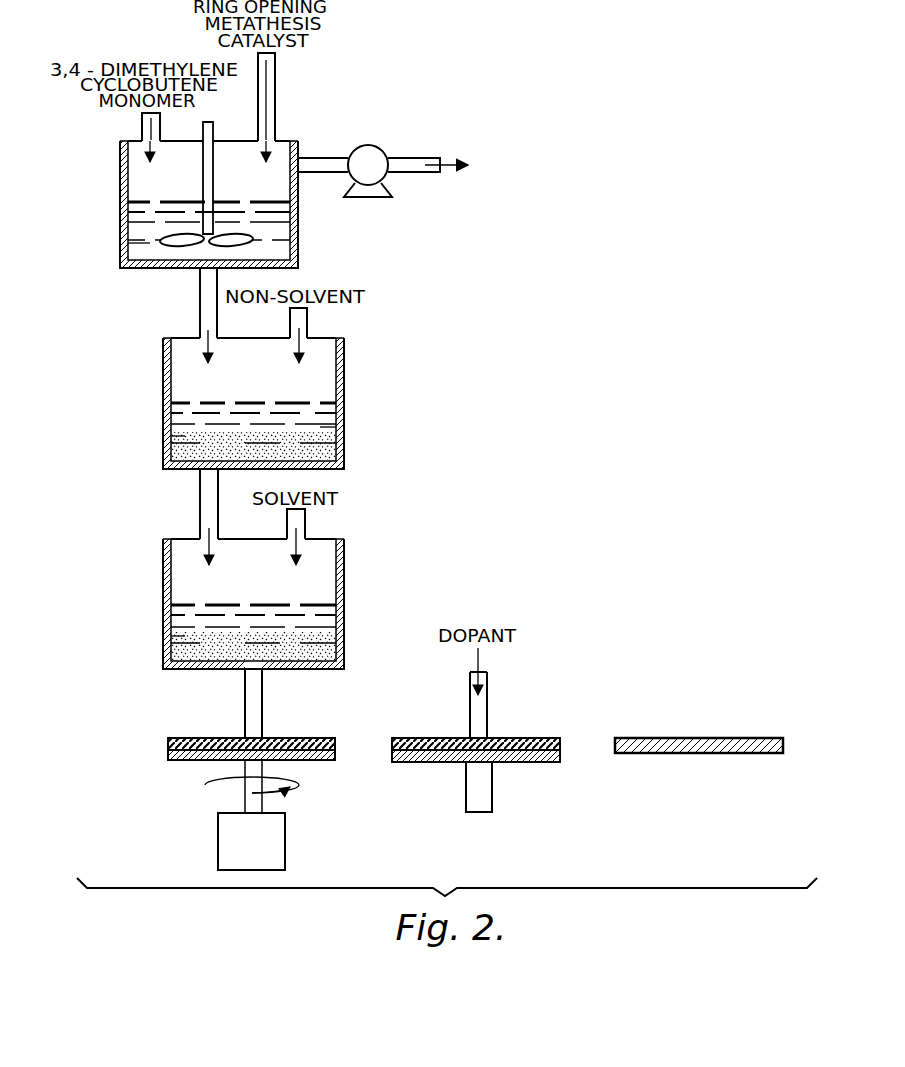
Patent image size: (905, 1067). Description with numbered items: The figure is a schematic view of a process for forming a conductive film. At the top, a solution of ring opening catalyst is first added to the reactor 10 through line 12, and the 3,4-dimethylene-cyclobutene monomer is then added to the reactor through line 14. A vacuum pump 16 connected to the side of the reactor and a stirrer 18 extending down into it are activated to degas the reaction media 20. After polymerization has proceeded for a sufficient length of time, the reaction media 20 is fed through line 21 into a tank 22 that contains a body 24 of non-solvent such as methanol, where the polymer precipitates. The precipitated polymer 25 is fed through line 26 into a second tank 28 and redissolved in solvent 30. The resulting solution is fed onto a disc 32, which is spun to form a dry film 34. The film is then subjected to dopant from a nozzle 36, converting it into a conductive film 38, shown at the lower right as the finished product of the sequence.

The reactor 10 is at (298, 222).
The line 12 is at (276, 95).
The line 14 is at (141, 126).
The vacuum pump 16 is at (376, 145).
The stirrer 18 is at (204, 189).
The reaction media 20 is at (140, 243).
The line 21 is at (200, 295).
The tank 22 is at (345, 380).
The body of non-solvent 24 is at (322, 427).
The precipitated polymer 25 is at (166, 435).
The line 26 is at (200, 503).
The tank 28 is at (345, 585).
The solvent 30 is at (166, 634).
The disc 32 is at (185, 758).
The dry film 34 is at (335, 748).
The nozzle 36 is at (538, 740).
The conductive film 38 is at (706, 738).